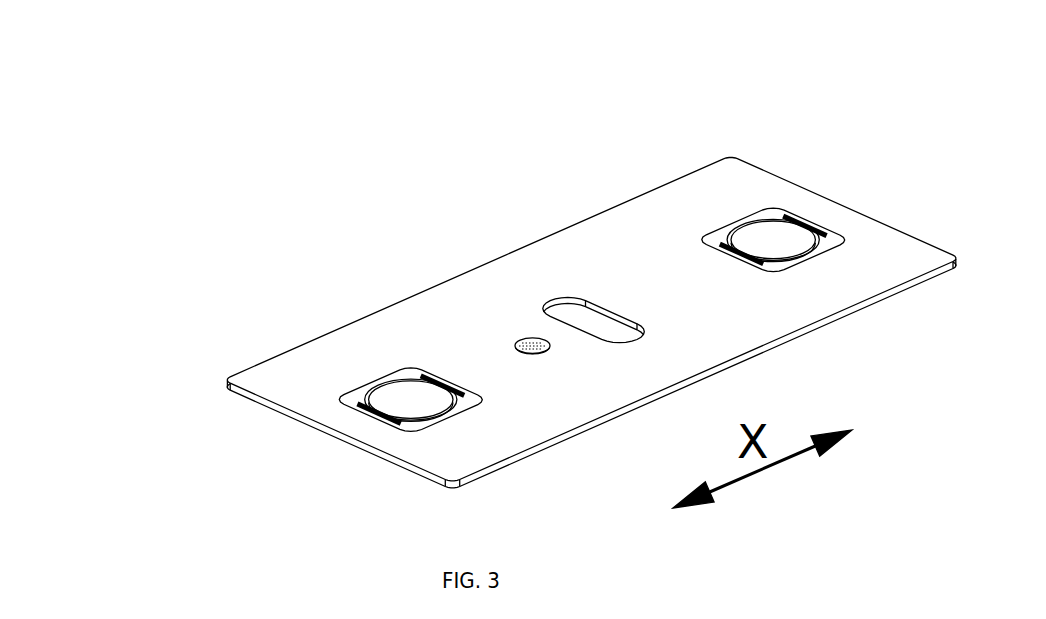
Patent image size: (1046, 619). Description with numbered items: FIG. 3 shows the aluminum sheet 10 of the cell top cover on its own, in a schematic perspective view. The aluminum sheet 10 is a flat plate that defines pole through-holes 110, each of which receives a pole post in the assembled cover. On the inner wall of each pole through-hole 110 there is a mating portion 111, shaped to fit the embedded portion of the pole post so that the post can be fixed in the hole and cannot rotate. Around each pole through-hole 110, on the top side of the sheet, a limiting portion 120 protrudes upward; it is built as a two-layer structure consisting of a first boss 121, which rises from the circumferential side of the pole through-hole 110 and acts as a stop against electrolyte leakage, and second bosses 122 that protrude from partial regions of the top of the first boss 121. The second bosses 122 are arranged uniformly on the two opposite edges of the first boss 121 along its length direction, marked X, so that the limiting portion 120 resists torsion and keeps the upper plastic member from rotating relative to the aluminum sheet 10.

The aluminum sheet 10 is at (470, 297).
The pole through-hole 110 is at (698, 167).
The mating portion 111 is at (790, 225).
The limiting portion 120 is at (262, 339).
The first boss 121 is at (402, 377).
The second boss 122 is at (365, 412).